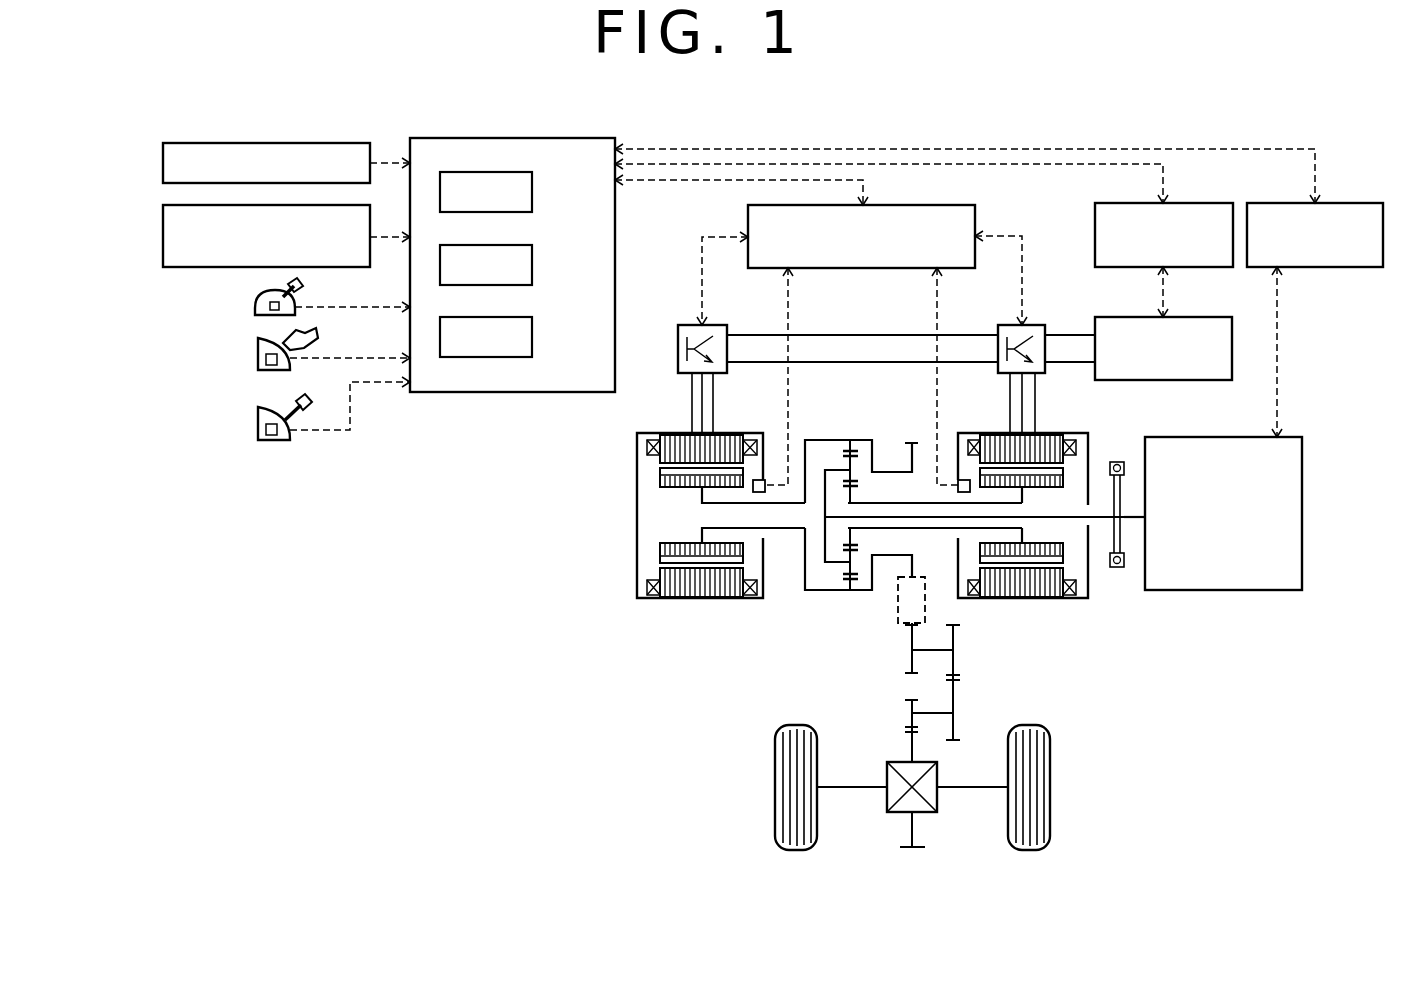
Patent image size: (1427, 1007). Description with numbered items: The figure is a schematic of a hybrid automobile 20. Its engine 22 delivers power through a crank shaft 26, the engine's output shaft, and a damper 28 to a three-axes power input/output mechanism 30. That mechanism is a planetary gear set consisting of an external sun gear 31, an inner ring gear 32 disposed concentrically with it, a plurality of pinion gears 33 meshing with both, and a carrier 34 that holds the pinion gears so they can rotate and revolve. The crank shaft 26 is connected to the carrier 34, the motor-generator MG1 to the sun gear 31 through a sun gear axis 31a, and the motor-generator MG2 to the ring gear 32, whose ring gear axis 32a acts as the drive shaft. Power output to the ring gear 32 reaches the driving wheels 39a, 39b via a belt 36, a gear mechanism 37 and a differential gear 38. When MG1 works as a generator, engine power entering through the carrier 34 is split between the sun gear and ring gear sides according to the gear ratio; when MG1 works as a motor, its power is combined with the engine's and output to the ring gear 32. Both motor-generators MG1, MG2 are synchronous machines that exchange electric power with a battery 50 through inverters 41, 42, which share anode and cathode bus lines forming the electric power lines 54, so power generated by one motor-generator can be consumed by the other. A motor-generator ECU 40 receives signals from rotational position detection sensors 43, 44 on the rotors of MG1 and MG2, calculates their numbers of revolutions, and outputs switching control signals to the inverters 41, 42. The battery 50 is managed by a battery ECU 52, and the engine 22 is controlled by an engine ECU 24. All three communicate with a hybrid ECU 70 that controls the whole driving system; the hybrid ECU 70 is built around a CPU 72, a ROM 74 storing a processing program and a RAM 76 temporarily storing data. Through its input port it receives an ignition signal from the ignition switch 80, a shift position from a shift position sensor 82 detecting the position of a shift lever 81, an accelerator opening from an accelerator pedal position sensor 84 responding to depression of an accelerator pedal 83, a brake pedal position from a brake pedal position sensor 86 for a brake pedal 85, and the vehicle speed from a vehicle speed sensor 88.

The hybrid automobile 20 is at (1235, 117).
The engine 22 is at (1287, 437).
The engine ECU 24 is at (1353, 203).
The crank shaft 26 is at (1133, 517).
The damper 28 is at (1113, 568).
The power input/output mechanism 30 is at (895, 560).
The sun gear 31 is at (826, 540).
The sun gear axis 31a is at (887, 530).
The ring gear 32 is at (853, 440).
The ring gear axis 32a is at (780, 528).
The pinion gears 33 is at (852, 473).
The carrier 34 is at (825, 470).
The belt 36 is at (925, 595).
The gear mechanism 37 is at (1052, 702).
The differential gear 38 is at (938, 797).
The driving wheel 39a is at (775, 810).
The driving wheel 39b is at (1050, 810).
The motor-generator ECU 40 is at (948, 205).
The inverter 41 is at (692, 325).
The inverter 42 is at (1037, 325).
The rotational position detection sensor 43 is at (963, 480).
The rotational position detection sensor 44 is at (760, 480).
The battery 50 is at (1112, 380).
The battery ECU 52 is at (1113, 203).
The electric power lines 54 is at (878, 362).
The hybrid ECU 70 is at (515, 138).
The CPU 72 is at (533, 190).
The ROM 74 is at (533, 263).
The RAM 76 is at (533, 335).
The ignition switch 80 is at (163, 161).
The shift lever 81 is at (290, 290).
The shift position sensor 82 is at (255, 307).
The accelerator pedal 83 is at (295, 335).
The accelerator pedal position sensor 84 is at (258, 358).
The brake pedal 85 is at (295, 405).
The brake pedal position sensor 86 is at (258, 430).
The vehicle speed sensor 88 is at (163, 235).
The motor-generator MG1 is at (1053, 598).
The motor-generator MG2 is at (703, 600).